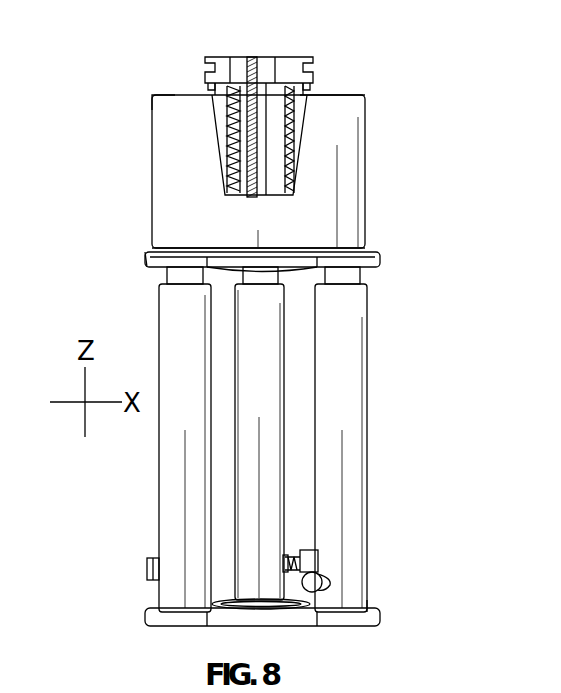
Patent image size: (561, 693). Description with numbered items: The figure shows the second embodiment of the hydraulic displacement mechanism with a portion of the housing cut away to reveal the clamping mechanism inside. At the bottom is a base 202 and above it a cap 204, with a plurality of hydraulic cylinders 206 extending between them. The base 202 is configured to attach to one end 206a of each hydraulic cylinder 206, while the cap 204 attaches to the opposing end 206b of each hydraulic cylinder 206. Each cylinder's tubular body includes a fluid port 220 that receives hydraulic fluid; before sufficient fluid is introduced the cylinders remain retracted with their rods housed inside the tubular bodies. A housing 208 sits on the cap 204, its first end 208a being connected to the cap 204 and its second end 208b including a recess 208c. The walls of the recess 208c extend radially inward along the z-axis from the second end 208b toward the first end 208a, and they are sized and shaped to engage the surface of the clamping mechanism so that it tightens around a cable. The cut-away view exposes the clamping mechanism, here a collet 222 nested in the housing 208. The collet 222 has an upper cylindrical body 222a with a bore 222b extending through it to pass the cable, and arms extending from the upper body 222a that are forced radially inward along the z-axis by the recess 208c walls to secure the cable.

The base 202 is at (210, 626).
The cap 204 is at (380, 263).
The hydraulic cylinders 206 is at (368, 414).
The one end of hydraulic cylinder 206a is at (147, 253).
The opposing end of hydraulic cylinder 206b is at (152, 94).
The housing 208 is at (366, 178).
The first end of housing 208a is at (366, 246).
The second end of housing 208b is at (366, 98).
The recess 208c is at (311, 78).
The fluid port 220 is at (146, 567).
The collet 222 is at (203, 70).
The upper cylindrical body 222a is at (299, 98).
The bore 222b is at (251, 58).